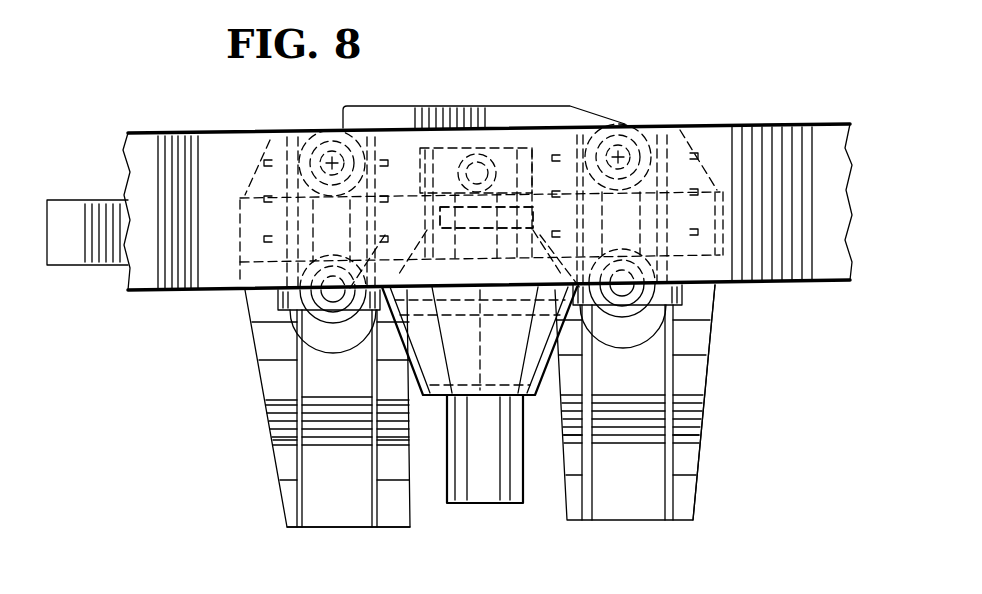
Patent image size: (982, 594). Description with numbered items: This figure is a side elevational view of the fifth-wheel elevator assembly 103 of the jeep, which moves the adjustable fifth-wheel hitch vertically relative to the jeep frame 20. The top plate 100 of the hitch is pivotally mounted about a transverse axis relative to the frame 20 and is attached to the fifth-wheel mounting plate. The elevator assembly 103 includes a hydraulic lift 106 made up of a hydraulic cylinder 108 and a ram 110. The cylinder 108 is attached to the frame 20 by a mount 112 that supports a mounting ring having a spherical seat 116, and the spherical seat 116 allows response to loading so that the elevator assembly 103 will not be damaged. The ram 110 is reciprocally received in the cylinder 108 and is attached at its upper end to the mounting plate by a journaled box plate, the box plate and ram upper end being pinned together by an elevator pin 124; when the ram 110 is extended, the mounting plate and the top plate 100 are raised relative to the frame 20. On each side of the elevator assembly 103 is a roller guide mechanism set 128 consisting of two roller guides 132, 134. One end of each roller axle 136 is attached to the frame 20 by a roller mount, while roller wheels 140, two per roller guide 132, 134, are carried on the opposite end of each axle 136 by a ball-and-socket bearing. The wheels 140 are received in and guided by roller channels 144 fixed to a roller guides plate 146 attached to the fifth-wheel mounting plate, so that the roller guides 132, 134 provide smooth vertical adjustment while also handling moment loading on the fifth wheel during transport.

The jeep frame 20 is at (125, 125).
The top plate 100 is at (430, 108).
The elevator assembly 103 is at (416, 406).
The hydraulic lift 106 is at (479, 348).
The hydraulic cylinder 108 is at (496, 504).
The ram 110 is at (520, 205).
The mount 112 is at (410, 322).
The spherical seat 116 is at (568, 352).
The elevator pin 124 is at (483, 147).
The roller guide mechanism set 128 is at (722, 296).
The roller guide 132 is at (652, 128).
The roller guide 134 is at (292, 133).
The roller axle 136 is at (612, 132).
The roller wheel 140 is at (633, 318).
The roller channel 144 is at (350, 527).
The roller guides plate 146 is at (707, 383).